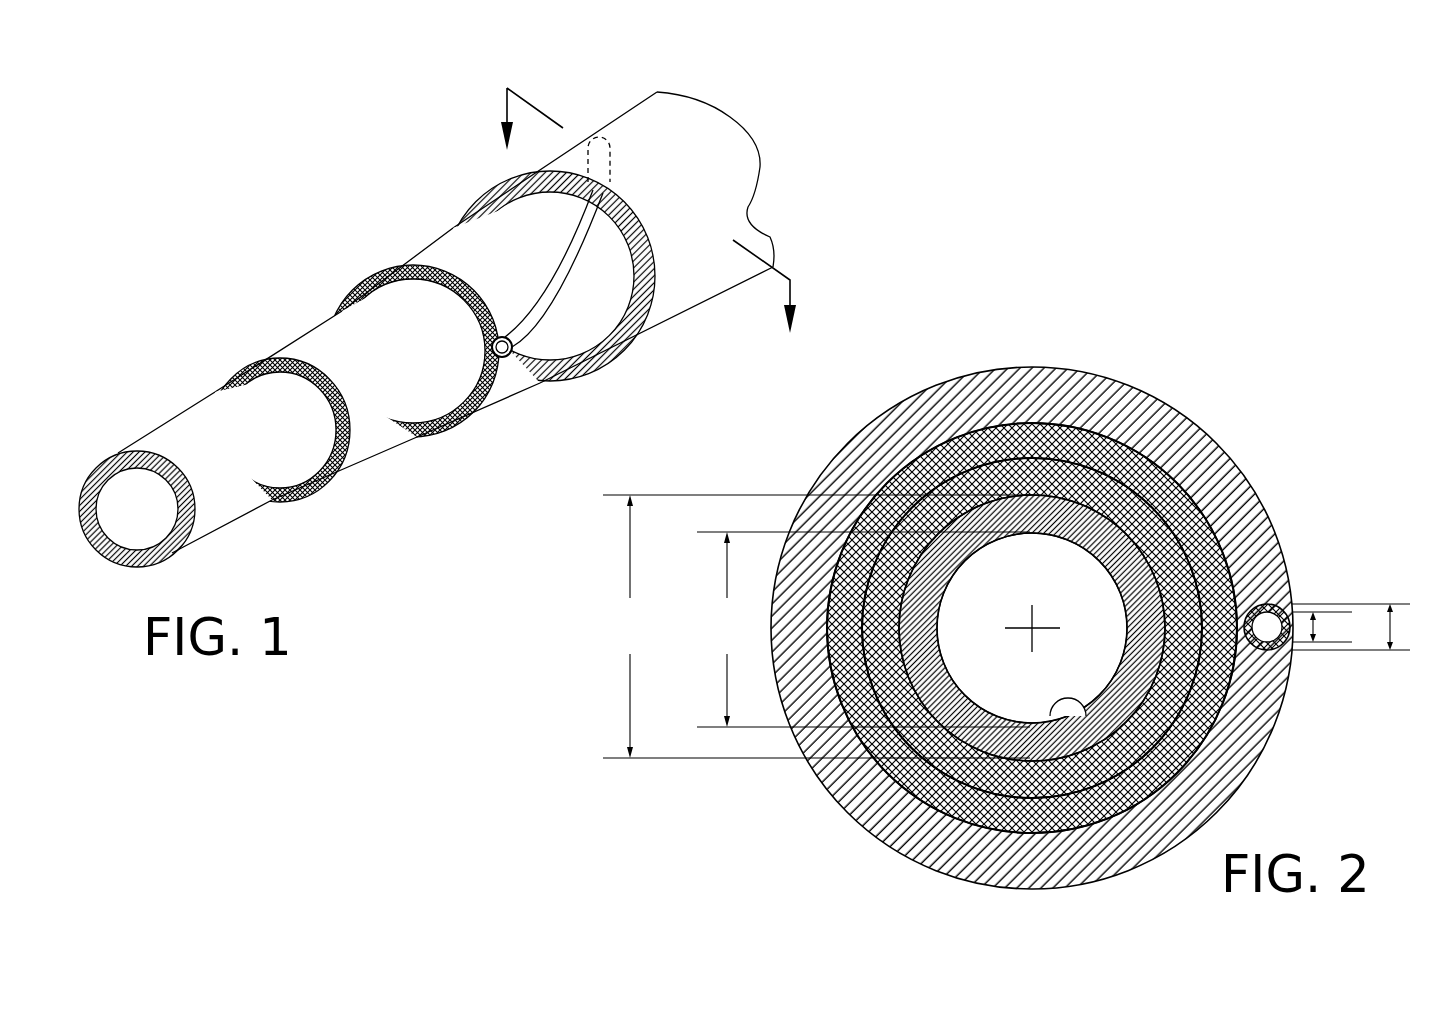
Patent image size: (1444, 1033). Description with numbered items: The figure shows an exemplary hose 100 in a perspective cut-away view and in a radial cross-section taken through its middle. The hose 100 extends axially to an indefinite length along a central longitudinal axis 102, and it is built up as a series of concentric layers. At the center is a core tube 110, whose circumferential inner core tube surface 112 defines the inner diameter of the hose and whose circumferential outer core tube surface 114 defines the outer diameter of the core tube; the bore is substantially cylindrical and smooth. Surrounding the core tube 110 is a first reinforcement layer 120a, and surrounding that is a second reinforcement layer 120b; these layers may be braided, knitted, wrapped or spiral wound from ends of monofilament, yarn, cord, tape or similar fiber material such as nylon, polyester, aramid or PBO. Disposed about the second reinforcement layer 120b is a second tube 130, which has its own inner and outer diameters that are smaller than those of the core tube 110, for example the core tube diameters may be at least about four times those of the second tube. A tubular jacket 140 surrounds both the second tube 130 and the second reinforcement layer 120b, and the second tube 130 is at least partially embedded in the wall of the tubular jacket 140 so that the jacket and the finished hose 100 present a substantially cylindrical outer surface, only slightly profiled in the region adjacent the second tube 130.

In FIG. 1, the hose 100 is at (352, 226).
In FIG. 2, the hose 100 is at (1017, 623).
In FIG. 2, the central longitudinal axis 102 is at (1040, 620).
In FIG. 1, the core tube 110 is at (227, 524).
In FIG. 2, the core tube 110 is at (1135, 563).
In FIG. 2, the inner core tube surface 112 is at (1093, 722).
In FIG. 2, the outer core tube surface 114 is at (1075, 760).
In FIG. 1, the first reinforcement layer 120a is at (384, 452).
In FIG. 2, the first reinforcement layer 120a is at (1168, 557).
In FIG. 1, the second reinforcement layer 120b is at (398, 262).
In FIG. 2, the second reinforcement layer 120b is at (1226, 580).
In FIG. 1, the second tube 130 is at (518, 356).
In FIG. 2, the second tube 130 is at (1248, 650).
In FIG. 1, the tubular jacket 140 is at (687, 313).
In FIG. 2, the tubular jacket 140 is at (1250, 710).